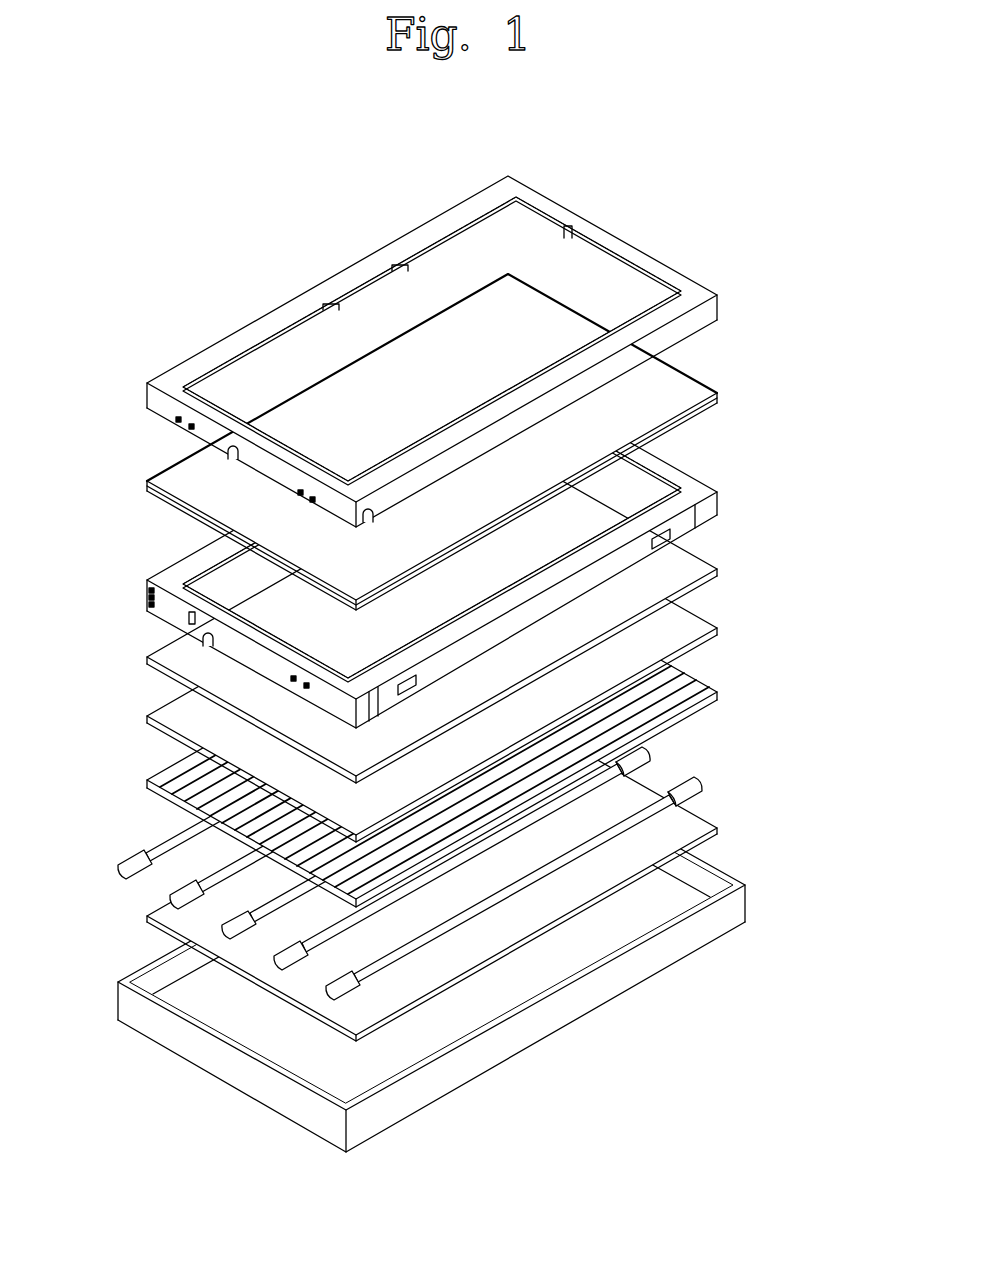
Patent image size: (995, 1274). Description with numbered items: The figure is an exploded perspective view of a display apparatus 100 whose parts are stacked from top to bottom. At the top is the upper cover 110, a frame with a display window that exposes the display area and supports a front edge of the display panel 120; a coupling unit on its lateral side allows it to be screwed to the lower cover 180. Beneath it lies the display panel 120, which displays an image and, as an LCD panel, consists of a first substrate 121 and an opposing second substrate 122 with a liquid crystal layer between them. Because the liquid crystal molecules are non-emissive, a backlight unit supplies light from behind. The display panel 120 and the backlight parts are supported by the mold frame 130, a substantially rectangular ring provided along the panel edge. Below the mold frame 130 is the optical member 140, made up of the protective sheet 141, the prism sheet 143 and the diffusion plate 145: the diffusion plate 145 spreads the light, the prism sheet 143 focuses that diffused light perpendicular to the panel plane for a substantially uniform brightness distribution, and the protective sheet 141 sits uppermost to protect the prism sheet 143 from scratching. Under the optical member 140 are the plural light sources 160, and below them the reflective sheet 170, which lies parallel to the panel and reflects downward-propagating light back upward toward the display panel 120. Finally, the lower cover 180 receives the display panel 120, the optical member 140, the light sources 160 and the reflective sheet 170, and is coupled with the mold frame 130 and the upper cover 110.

The display apparatus 100 is at (364, 215).
The upper cover 110 is at (685, 325).
The display panel 120 is at (508, 442).
The first substrate 121 is at (690, 417).
The second substrate 122 is at (690, 398).
The mold frame 130 is at (700, 497).
The optical member 140 is at (508, 678).
The protective sheet 141 is at (812, 720).
The prism sheet 143 is at (700, 640).
The diffusion plate 145 is at (700, 697).
The light sources 160 is at (153, 850).
The reflective sheet 170 is at (700, 832).
The lower cover 180 is at (545, 965).